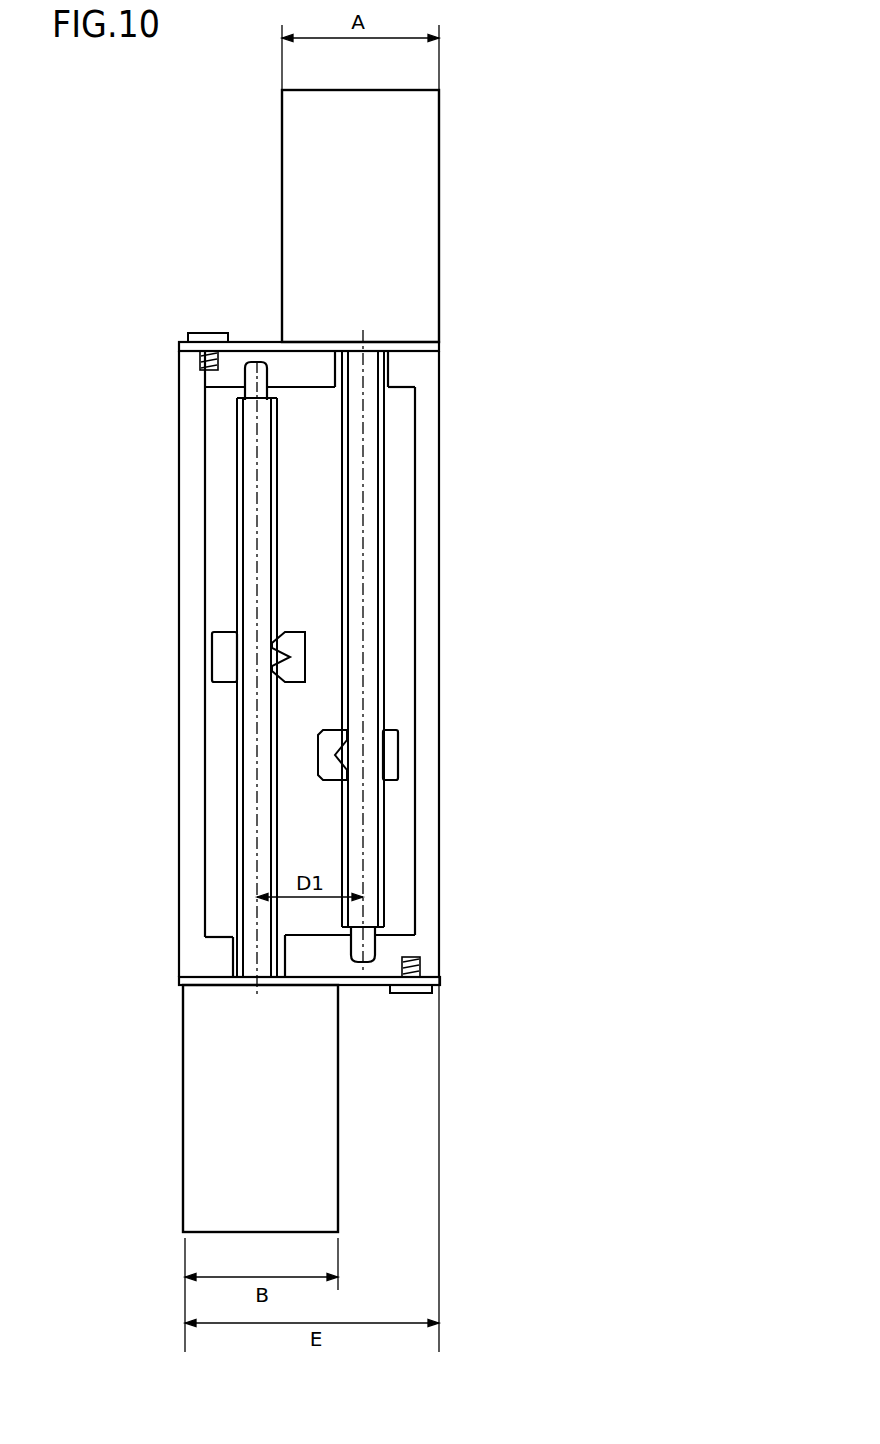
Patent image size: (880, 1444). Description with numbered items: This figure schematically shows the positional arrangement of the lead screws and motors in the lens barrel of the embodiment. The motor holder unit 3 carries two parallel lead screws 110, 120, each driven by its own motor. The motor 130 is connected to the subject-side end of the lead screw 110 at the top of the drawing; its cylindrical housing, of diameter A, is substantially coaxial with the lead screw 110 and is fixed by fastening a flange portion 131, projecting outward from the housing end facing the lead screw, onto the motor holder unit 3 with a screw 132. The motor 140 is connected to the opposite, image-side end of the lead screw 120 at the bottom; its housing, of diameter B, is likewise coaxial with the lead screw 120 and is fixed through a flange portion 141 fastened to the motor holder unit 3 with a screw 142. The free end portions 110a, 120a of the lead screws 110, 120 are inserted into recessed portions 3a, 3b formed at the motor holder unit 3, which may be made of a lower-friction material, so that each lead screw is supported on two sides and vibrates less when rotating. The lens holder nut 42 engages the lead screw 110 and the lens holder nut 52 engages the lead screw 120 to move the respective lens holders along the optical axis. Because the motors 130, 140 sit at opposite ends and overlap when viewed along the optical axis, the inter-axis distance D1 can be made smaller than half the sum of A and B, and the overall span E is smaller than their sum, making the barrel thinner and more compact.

The motor holder unit 3 is at (198, 743).
The recessed portion 3a is at (373, 957).
The recessed portion 3b is at (245, 363).
The lens holder nut 42 is at (393, 753).
The lens holder nut 52 is at (223, 653).
The lead screw 110 is at (360, 462).
The end portion 110a is at (371, 932).
The lead screw 120 is at (250, 497).
The end portion 120a is at (253, 388).
The motor 130 is at (405, 162).
The flange portion 131 is at (263, 345).
The screw 132 is at (207, 337).
The motor 140 is at (203, 1128).
The flange portion 141 is at (360, 983).
The screw 142 is at (418, 993).